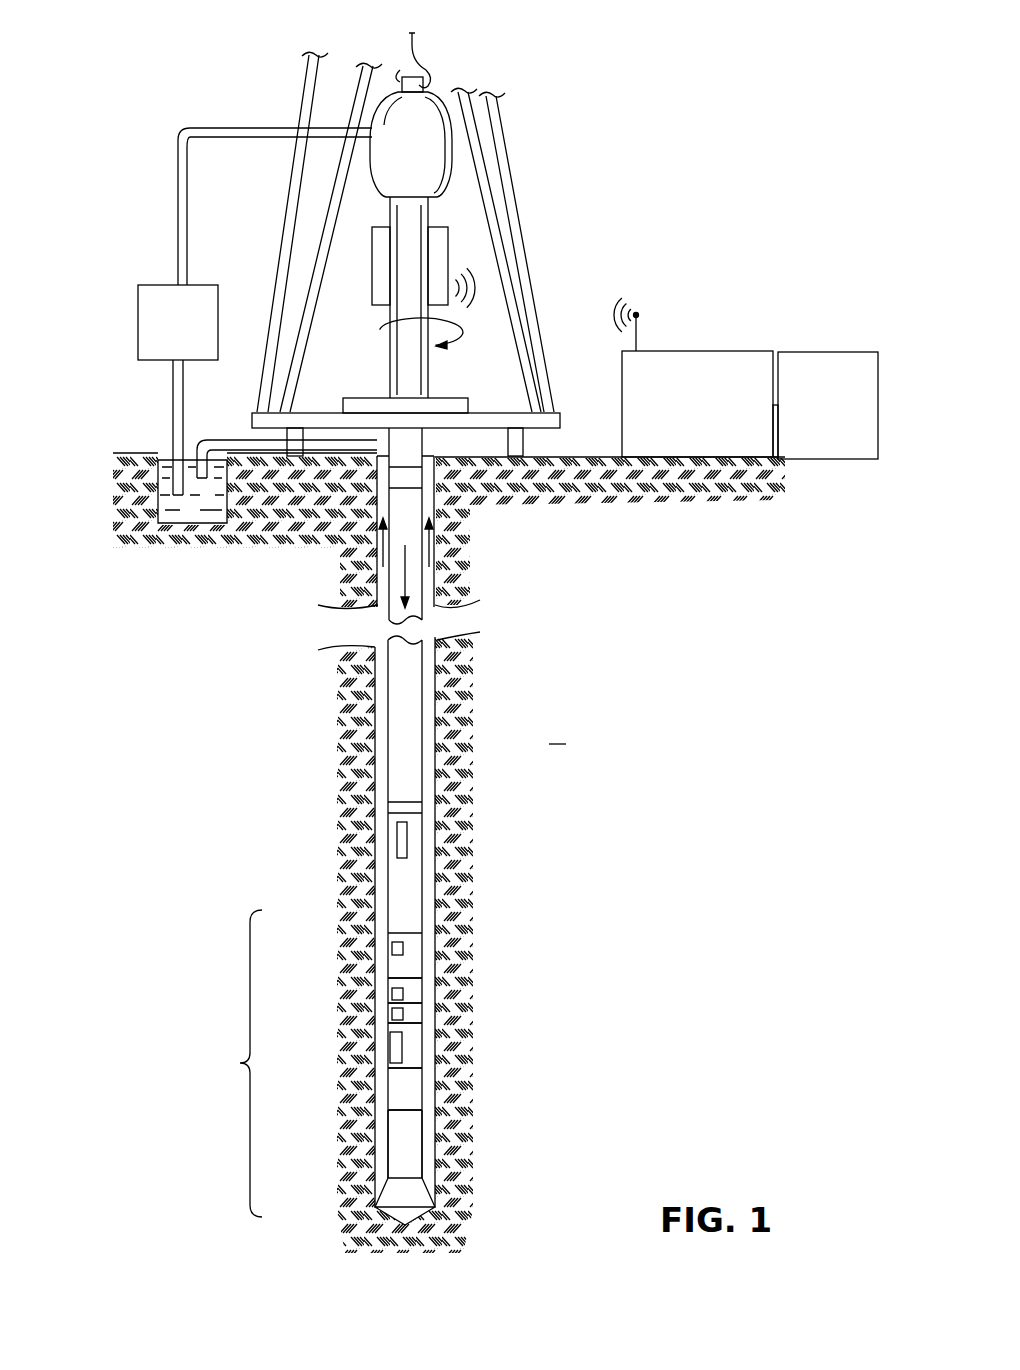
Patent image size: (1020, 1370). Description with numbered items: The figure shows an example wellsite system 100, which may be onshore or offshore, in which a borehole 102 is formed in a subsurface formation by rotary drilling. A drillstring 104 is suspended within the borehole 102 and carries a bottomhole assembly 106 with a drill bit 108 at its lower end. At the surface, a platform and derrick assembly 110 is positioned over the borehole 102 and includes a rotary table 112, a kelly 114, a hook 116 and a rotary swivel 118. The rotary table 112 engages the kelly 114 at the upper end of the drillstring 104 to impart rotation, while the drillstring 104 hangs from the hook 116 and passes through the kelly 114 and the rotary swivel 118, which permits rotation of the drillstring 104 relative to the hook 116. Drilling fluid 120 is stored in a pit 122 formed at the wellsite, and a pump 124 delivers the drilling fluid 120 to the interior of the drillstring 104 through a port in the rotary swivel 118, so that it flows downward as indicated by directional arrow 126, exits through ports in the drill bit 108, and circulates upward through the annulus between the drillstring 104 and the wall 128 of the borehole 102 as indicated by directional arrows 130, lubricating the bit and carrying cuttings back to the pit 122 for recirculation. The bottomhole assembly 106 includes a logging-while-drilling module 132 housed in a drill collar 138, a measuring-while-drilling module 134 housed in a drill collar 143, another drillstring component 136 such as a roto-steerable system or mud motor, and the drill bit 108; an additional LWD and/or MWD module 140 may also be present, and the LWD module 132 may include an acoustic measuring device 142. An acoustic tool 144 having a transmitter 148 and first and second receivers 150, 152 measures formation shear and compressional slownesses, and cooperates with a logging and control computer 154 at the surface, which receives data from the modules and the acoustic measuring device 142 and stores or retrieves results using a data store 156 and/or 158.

The wellsite system 100 is at (720, 32).
The borehole 102 is at (432, 450).
The drillstring 104 is at (398, 450).
The bottomhole assembly 106 is at (240, 1062).
The drill bit 108 is at (410, 1196).
The platform and derrick assembly 110 is at (535, 118).
The rotary table 112 is at (433, 397).
The kelly 114 is at (397, 372).
The hook 116 is at (413, 42).
The rotary swivel 118 is at (383, 196).
The drilling fluid 120 is at (183, 513).
The pit 122 is at (163, 452).
The pump 124 is at (147, 362).
The directional arrow 126 is at (392, 580).
The wall of the borehole 128 is at (437, 838).
The directional arrows 130 is at (377, 558).
The logging-while-drilling module 132 is at (410, 1010).
The measuring-while-drilling module 134 is at (410, 1062).
The drillstring component 136 is at (410, 1150).
The drill collar 138 is at (410, 985).
The additional LWD and/or MWD module 140 is at (408, 1103).
The acoustic measuring device 142 is at (392, 1013).
The drill collar 143 is at (410, 1037).
The acoustic tool 144 is at (600, 868).
The transmitter 148 is at (395, 835).
The first receiver 150 is at (392, 948).
The second receiver 152 is at (392, 993).
The logging and control computer 154 is at (733, 351).
The data store 156 is at (390, 1052).
The data store 158 is at (815, 352).